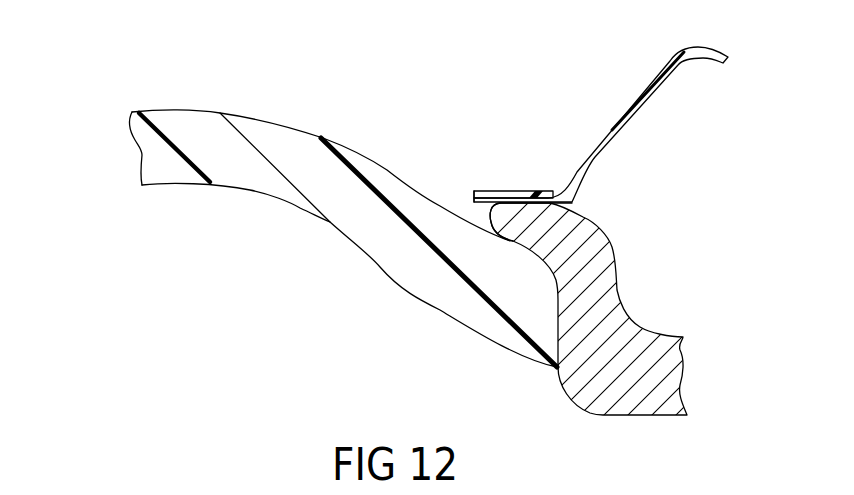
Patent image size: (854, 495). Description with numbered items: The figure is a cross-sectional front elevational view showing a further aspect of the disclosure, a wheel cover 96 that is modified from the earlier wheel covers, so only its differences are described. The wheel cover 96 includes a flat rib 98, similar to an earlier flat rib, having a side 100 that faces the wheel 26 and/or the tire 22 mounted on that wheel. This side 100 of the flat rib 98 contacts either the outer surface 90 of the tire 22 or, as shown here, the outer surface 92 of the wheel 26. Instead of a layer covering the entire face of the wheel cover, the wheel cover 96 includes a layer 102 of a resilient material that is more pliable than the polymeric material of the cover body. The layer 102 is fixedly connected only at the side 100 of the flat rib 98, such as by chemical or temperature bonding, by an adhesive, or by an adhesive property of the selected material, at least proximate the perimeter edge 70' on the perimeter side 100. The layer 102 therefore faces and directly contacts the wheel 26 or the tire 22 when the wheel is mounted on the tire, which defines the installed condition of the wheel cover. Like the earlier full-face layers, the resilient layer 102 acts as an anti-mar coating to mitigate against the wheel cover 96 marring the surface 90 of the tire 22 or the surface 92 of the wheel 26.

The tire 22 is at (147, 152).
The outer surface of tire 90 is at (184, 99).
The wheel 26 is at (607, 309).
The flat rib 98 is at (497, 192).
The outer surface of wheel 92 is at (534, 180).
The perimeter edge 70' is at (446, 171).
The layer of resilient material 102 is at (552, 203).
The side of flat rib 100 is at (481, 209).
The wheel cover 96 is at (655, 164).